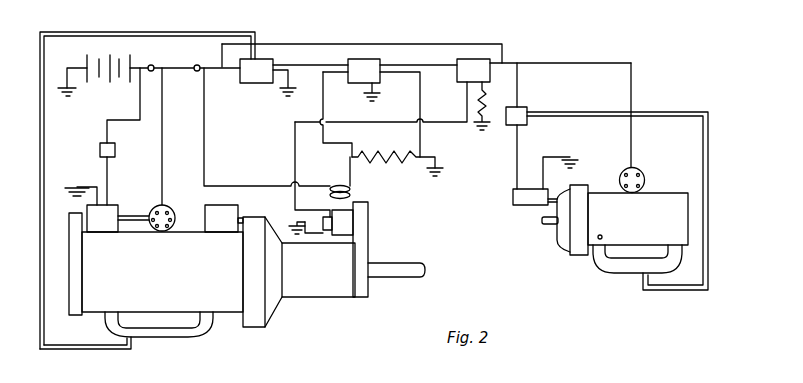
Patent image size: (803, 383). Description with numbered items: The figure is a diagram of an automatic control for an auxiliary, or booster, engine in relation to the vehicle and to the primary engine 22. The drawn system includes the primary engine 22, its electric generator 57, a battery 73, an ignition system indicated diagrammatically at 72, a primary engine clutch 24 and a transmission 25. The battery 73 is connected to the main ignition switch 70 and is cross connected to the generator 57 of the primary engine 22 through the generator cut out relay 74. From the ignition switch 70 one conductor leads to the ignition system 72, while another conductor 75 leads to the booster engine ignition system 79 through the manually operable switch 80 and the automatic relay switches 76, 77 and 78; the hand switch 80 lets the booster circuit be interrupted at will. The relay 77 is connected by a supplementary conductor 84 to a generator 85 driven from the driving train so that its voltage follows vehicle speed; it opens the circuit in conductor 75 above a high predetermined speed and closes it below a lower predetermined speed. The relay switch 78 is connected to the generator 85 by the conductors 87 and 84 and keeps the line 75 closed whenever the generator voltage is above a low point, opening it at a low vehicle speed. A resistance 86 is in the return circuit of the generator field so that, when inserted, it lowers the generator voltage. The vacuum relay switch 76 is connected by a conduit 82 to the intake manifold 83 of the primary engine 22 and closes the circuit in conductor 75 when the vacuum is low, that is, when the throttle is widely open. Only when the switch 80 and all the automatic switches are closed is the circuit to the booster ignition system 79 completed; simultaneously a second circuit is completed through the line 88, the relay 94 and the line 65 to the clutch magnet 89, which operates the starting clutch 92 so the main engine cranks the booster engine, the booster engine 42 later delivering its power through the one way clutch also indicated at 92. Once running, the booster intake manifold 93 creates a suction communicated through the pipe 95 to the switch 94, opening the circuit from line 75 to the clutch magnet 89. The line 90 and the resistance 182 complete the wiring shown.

The conduit 82 is at (97, 31).
The battery 73 is at (101, 91).
The main ignition switch 70 is at (151, 64).
The manually operable switch 80 is at (198, 64).
The generator cut out relay 74 is at (100, 152).
The electric generator 57 is at (115, 213).
The ignition system 72 is at (166, 207).
The primary engine 22 is at (156, 260).
The intake manifold 83 is at (201, 328).
The primary engine clutch 24 is at (270, 303).
The transmission 25 is at (312, 287).
The generator 85 is at (347, 228).
The supplementary conductor 84 is at (294, 157).
The resistance 86 is at (372, 158).
The conductor 87 is at (441, 123).
The vacuum relay switch 76 is at (263, 62).
The relay 77 is at (362, 61).
The relay switch 78 is at (472, 61).
The resistor 182 is at (488, 110).
The conductor 75 is at (208, 69).
The lead 90 is at (493, 42).
The line 88 is at (518, 82).
The relay 94 is at (520, 118).
The line 65 is at (515, 174).
The clutch magnet 89 is at (514, 204).
The pipe 95 is at (649, 112).
The booster engine ignition system 79 is at (642, 177).
The auxiliary engine 42 is at (629, 220).
The starting clutch 92 is at (566, 243).
The intake manifold 93 is at (618, 263).